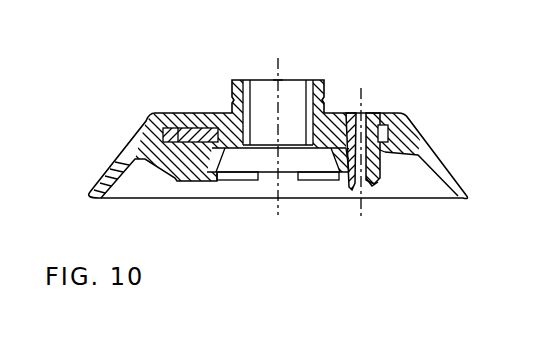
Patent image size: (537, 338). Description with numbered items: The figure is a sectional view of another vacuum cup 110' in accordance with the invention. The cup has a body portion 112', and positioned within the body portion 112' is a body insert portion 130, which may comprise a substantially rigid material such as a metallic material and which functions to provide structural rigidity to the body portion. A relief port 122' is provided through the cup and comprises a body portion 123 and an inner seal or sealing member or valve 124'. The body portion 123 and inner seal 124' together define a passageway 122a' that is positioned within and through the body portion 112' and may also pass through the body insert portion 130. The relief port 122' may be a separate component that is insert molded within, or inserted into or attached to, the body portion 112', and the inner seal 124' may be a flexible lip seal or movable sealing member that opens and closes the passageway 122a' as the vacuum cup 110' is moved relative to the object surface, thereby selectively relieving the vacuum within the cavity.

The vacuum cup 110' is at (290, 142).
The body portion 112' is at (168, 124).
The relief port 122' is at (388, 105).
The passageway 122a' is at (315, 107).
The body portion 123 is at (381, 153).
The inner seal 124' is at (397, 219).
The body insert portion 130 is at (212, 137).